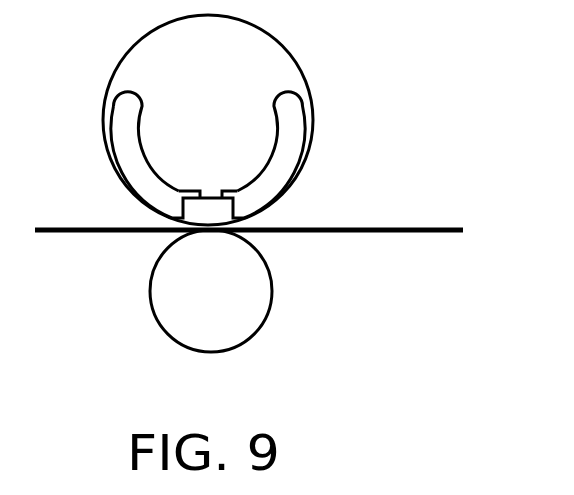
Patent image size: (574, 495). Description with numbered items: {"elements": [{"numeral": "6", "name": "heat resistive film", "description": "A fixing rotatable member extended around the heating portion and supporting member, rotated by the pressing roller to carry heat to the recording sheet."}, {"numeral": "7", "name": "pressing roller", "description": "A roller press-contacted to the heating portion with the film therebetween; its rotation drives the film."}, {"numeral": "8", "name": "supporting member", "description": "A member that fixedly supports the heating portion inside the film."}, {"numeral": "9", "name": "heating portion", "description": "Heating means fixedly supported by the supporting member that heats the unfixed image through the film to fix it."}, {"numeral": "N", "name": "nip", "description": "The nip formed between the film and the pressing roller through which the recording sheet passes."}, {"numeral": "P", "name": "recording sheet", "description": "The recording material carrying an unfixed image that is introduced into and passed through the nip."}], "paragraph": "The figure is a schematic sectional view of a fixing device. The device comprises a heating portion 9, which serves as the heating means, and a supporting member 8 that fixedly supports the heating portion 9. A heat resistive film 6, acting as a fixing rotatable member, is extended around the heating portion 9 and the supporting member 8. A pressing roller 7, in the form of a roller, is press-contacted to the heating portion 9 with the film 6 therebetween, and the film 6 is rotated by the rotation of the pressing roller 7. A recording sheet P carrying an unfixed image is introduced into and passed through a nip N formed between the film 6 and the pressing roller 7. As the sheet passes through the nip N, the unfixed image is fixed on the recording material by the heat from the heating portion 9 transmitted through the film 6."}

The fixing roller 6 is at (106, 88).
The pressure roller 7 is at (252, 338).
The heater 8 is at (295, 117).
The heater holding portion 9 is at (222, 208).
The nip portion N is at (208, 234).
The recording paper P is at (355, 233).